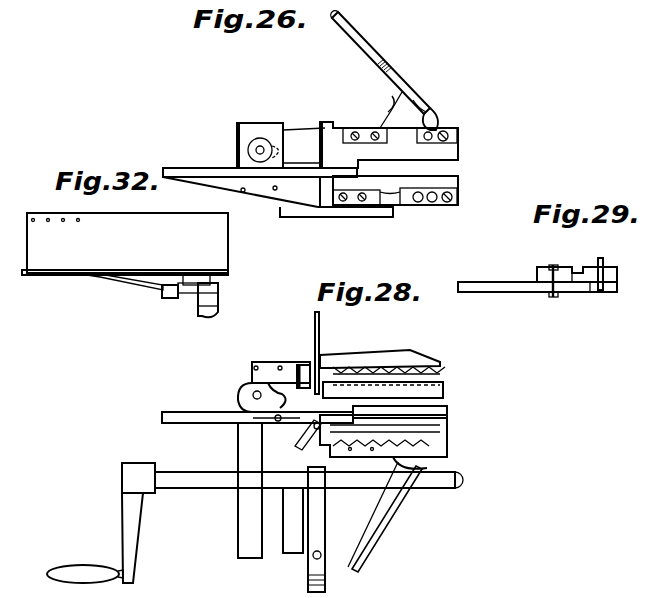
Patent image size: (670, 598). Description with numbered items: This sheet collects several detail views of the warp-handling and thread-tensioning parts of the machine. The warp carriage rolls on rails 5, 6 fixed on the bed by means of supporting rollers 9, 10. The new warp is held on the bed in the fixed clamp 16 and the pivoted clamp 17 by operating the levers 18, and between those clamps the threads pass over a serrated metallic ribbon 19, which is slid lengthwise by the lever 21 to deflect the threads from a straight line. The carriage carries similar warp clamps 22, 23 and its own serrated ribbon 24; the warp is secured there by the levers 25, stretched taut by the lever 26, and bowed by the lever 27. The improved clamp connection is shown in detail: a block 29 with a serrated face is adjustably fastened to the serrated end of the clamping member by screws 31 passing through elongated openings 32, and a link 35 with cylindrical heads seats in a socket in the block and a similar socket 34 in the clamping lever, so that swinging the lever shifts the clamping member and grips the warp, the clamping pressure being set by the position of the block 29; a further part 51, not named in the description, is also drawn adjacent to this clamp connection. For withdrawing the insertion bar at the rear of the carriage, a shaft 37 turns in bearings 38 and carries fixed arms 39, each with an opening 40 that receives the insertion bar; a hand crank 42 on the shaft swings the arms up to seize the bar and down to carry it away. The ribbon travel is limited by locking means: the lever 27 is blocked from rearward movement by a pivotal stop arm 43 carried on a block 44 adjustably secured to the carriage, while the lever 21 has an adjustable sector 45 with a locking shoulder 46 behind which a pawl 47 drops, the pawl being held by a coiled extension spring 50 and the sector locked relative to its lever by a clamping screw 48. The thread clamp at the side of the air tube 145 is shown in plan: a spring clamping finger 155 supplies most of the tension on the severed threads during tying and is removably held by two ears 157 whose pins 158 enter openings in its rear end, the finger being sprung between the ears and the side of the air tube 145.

In FIG. 26, the rail 5 is at (196, 168).
In FIG. 28, the rail 6 is at (172, 412).
In FIG. 26, the supporting roller 9 is at (259, 138).
In FIG. 28, the supporting roller 10 is at (241, 381).
In FIG. 28, the fixed clamp 16 is at (450, 443).
In FIG. 26, the pivoted clamp 17 is at (458, 188).
In FIG. 26, the lever 18 is at (358, 217).
In FIG. 28, the lever 18 is at (404, 500).
In FIG. 28, the serrated metallic ribbon 19 is at (447, 417).
In FIG. 29, the lever 21 is at (498, 292).
In FIG. 28, the lever 21 is at (262, 468).
In FIG. 28, the warp clamp 22 is at (440, 374).
In FIG. 26, the warp clamp 23 is at (458, 156).
In FIG. 28, the serrated ribbon 24 is at (440, 400).
In FIG. 26, the lever 25 is at (365, 48).
In FIG. 28, the lever 25 is at (368, 355).
In FIG. 28, the lever 26 is at (443, 457).
In FIG. 28, the lever 27 is at (320, 337).
In FIG. 26, the block 29 is at (374, 128).
In FIG. 26, the screw 31 is at (393, 72).
In FIG. 26, the elongated opening 32 is at (328, 136).
In FIG. 26, the socket 34 is at (440, 110).
In FIG. 26, the link 35 is at (416, 97).
In FIG. 28, the link 35 is at (395, 470).
In FIG. 28, the shaft 37 is at (193, 488).
In FIG. 28, the bearing 38 is at (287, 543).
In FIG. 28, the fixed arm 39 is at (335, 529).
In FIG. 29, the opening 40 is at (567, 267).
In FIG. 28, the hand crank 42 is at (82, 566).
In FIG. 28, the pivotal stop arm 43 is at (302, 364).
In FIG. 28, the block 44 is at (268, 366).
In FIG. 29, the adjustable sector 45 is at (590, 288).
In FIG. 29, the locking shoulder 46 is at (604, 273).
In FIG. 28, the pawl 47 is at (262, 406).
In FIG. 29, the clamping screw 48 is at (553, 297).
In FIG. 28, the coiled extension spring 50 is at (282, 428).
In FIG. 26, the screw block 51 is at (366, 128).
In FIG. 32, the air tube 145 is at (125, 244).
In FIG. 32, the spring clamping finger 155 is at (138, 281).
In FIG. 32, the ear 157 is at (190, 281).
In FIG. 32, the pin 158 is at (168, 283).